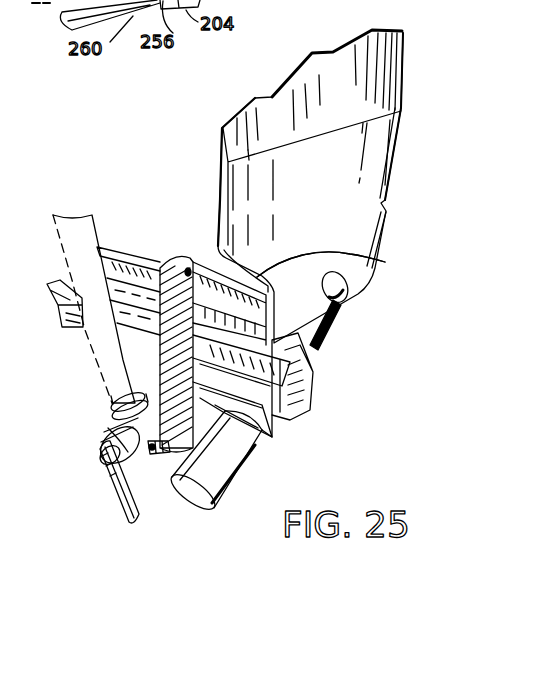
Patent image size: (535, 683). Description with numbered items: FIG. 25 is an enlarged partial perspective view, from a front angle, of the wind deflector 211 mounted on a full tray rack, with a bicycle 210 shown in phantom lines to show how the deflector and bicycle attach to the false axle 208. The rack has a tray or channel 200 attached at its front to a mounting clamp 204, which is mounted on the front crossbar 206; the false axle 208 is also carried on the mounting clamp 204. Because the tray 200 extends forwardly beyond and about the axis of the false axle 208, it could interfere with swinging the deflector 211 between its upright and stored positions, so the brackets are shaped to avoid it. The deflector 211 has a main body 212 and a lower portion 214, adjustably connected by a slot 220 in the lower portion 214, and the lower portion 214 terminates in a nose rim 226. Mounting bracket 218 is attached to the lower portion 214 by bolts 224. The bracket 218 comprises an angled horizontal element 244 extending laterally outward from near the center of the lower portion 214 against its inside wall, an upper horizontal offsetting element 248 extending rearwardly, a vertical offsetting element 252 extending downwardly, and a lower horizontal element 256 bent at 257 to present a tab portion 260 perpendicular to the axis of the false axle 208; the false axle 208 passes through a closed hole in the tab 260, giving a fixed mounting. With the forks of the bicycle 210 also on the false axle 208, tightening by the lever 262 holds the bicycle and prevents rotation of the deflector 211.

The tray 200 is at (100, 245).
The mounting clamp 204 is at (313, 404).
The front crossbar 206 is at (243, 463).
The false axle 208 is at (110, 437).
The bicycle 210 is at (92, 214).
The deflector 211 is at (210, 135).
The main body 212 is at (330, 52).
The lower portion 214 is at (387, 225).
The mounting bracket 218 is at (171, 246).
The slot 220 is at (392, 157).
The bolts 224 is at (348, 283).
The nose rim 226 is at (341, 310).
The angled horizontal element 244 is at (385, 262).
The upper horizontal offsetting element 248 is at (191, 268).
The vertical offsetting element 252 is at (122, 331).
The lower horizontal element 256 is at (166, 456).
The bend 257 is at (150, 455).
The tab portion 260 is at (148, 402).
The lever 262 is at (118, 507).